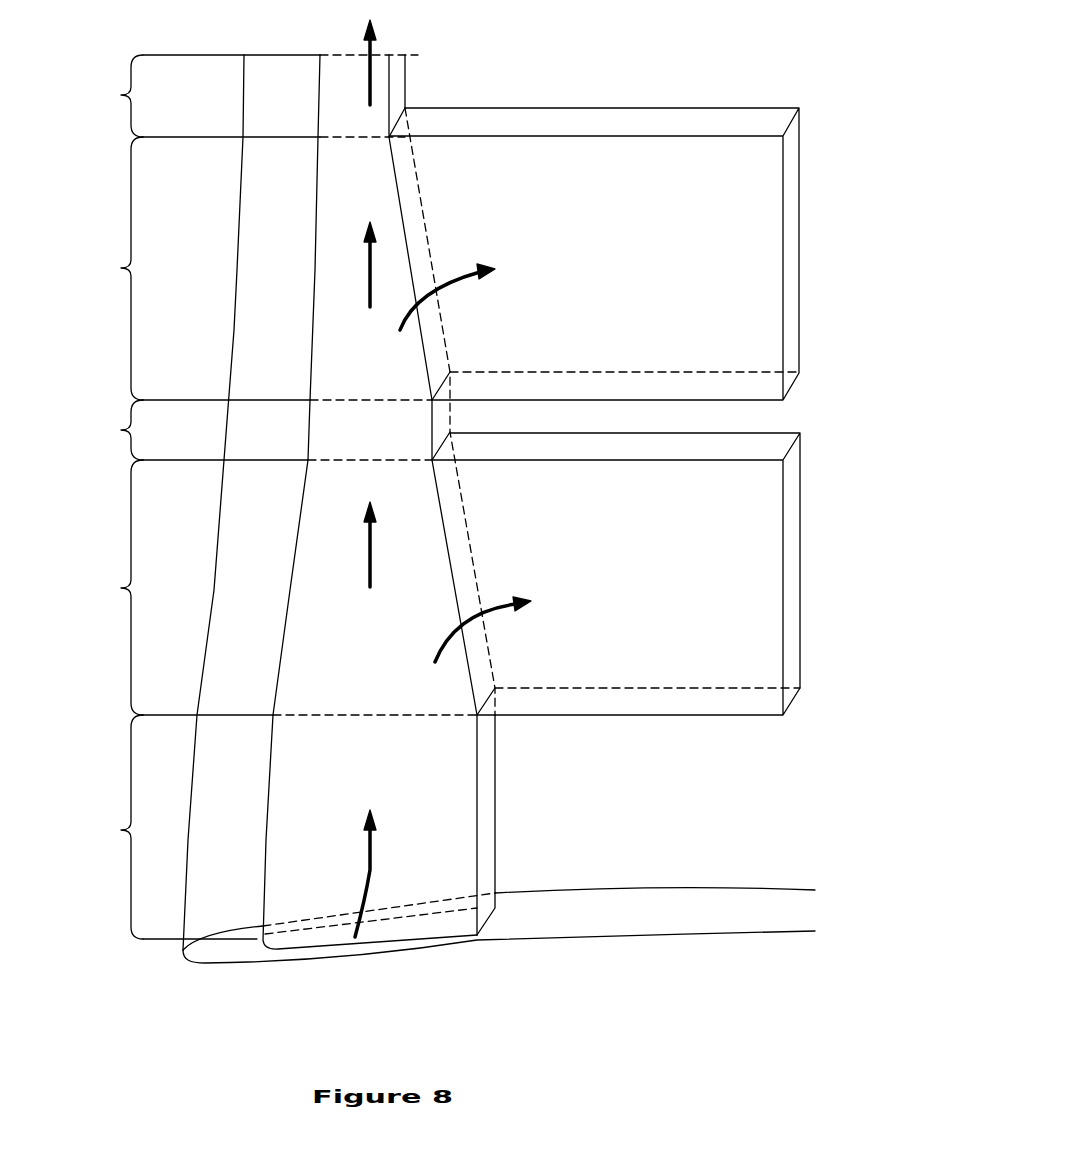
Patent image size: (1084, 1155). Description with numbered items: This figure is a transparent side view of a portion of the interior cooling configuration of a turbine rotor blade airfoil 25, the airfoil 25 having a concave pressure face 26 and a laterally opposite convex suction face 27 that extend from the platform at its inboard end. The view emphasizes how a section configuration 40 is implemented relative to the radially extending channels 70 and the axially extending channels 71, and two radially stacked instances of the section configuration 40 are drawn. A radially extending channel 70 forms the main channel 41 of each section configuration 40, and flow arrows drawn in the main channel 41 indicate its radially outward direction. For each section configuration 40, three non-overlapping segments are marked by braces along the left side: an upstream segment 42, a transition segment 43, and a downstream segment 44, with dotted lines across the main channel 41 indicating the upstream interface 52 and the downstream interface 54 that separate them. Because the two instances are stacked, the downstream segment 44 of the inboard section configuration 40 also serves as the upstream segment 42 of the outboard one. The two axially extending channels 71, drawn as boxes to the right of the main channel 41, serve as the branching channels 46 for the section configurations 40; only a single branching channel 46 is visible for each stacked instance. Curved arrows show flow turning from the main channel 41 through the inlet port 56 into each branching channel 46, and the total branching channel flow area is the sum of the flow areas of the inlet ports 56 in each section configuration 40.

The airfoil 25 is at (593, 806).
The pressure face 26 is at (548, 940).
The suction face 27 is at (595, 887).
The section configuration 40 is at (266, 227).
The main channel 41 is at (333, 98).
The upstream segment 42 is at (181, 827).
The transition segment 43 is at (200, 426).
The downstream segment 44 is at (186, 257).
The branching channel 46 is at (595, 263).
The upstream interface 52 is at (348, 400).
The downstream interface 54 is at (347, 138).
The inlet port 56 is at (415, 240).
The radially extending channel 70 is at (328, 245).
The axially extending channel 71 is at (571, 321).